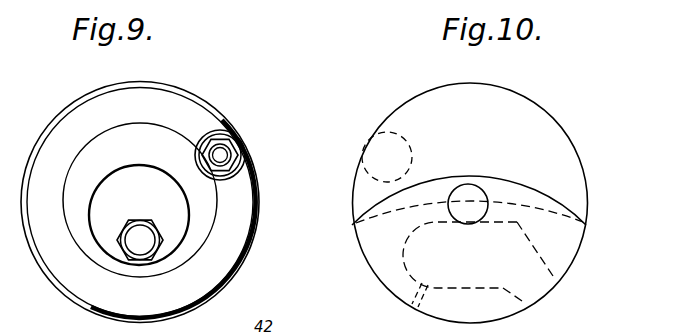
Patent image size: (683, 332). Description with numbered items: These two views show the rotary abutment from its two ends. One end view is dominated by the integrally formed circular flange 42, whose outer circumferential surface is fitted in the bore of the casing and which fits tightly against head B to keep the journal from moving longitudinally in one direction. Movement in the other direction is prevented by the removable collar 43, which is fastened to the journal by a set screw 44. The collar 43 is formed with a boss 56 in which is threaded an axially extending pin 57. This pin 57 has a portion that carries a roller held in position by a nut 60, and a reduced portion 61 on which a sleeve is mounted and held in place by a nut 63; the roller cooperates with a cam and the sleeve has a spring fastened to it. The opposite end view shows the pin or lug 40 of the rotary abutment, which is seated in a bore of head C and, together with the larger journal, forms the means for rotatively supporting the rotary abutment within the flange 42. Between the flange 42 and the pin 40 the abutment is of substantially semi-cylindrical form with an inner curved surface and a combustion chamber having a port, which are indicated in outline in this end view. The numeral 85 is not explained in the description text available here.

In FIG. 10, the pin or lug 40 is at (468, 193).
In FIG. 9, the circular flange 42 is at (185, 91).
In FIG. 10, the circular flange 42 is at (547, 119).
In FIG. 9, the removable collar 43 is at (69, 120).
In FIG. 9, the set screw 44 is at (167, 330).
In FIG. 9, the boss 56 is at (212, 183).
In FIG. 9, the axially extending pin 57 is at (139, 241).
In FIG. 9, the nut 60 is at (236, 160).
In FIG. 9, the reduced portion 61 is at (231, 151).
In FIG. 9, the nut 63 is at (222, 153).
In FIG. 10, the member 85 is at (579, 326).